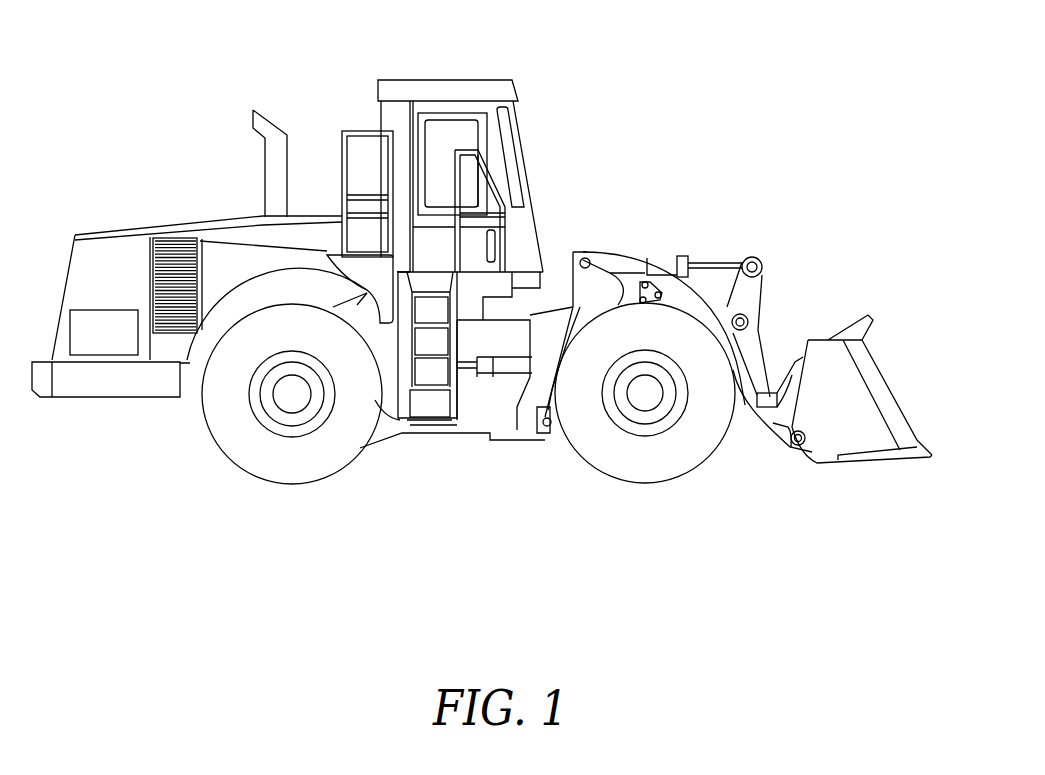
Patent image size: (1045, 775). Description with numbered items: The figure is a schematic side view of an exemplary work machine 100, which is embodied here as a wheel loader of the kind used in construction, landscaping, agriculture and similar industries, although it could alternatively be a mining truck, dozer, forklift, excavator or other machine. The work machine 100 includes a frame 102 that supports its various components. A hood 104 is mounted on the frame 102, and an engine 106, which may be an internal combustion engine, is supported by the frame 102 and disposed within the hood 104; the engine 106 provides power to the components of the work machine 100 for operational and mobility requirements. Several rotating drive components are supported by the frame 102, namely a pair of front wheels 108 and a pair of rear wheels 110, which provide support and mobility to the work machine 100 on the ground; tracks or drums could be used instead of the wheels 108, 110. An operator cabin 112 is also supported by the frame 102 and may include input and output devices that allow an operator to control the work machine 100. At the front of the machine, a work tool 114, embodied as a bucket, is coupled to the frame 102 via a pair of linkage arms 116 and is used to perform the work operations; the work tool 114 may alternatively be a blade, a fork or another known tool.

The work machine 100 is at (792, 45).
The frame 102 is at (430, 430).
The hood 104 is at (110, 242).
The engine 106 is at (120, 345).
The front wheels 108 is at (643, 464).
The rear wheels 110 is at (295, 462).
The operator cabin 112 is at (445, 87).
The work tool 114 is at (842, 390).
The linkage arms 116 is at (763, 433).